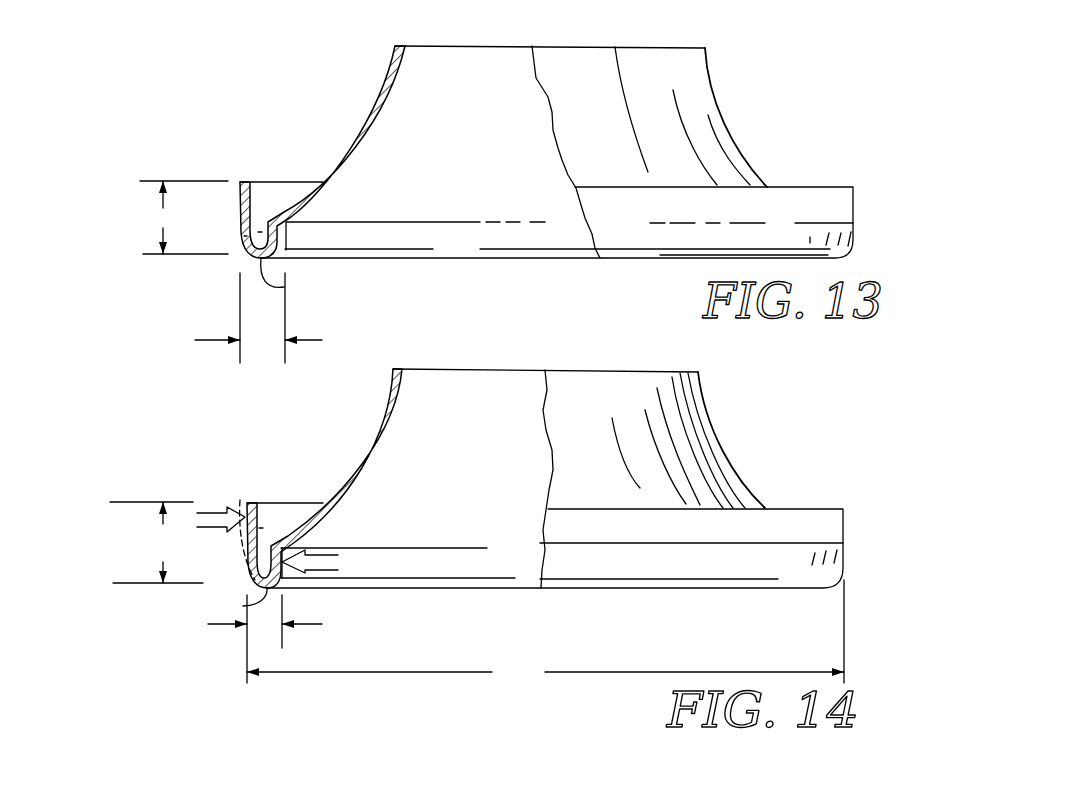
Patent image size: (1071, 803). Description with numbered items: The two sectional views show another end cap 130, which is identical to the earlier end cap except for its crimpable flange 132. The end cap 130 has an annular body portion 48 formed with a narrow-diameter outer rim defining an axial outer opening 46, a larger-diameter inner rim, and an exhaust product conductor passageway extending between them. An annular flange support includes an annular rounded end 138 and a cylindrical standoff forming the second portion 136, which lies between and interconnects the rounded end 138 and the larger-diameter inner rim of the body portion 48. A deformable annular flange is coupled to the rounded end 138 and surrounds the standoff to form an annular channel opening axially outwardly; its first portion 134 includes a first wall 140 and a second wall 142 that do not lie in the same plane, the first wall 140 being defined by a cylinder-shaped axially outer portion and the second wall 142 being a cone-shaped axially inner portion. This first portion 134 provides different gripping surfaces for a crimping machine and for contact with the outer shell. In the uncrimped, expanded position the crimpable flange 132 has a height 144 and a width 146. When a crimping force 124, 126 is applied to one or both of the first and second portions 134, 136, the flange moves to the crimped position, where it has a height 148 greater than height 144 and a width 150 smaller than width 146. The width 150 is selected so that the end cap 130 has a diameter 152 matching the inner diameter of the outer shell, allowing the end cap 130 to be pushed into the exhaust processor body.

In FIG. 13, the axial outer opening 46 is at (433, 46).
In FIG. 14, the axial outer opening 46 is at (430, 369).
In FIG. 13, the annular body portion 48 is at (390, 106).
In FIG. 14, the annular body portion 48 is at (385, 447).
In FIG. 14, the crimping force 124 is at (212, 515).
In FIG. 14, the crimping force 126 is at (328, 557).
In FIG. 13, the end cap 130 is at (744, 68).
In FIG. 14, the end cap 130 is at (778, 445).
In FIG. 13, the crimpable flange 132 is at (860, 209).
In FIG. 14, the crimpable flange 132 is at (852, 532).
In FIG. 13, the first portion 134 is at (252, 232).
In FIG. 14, the first portion 134 is at (260, 528).
In FIG. 13, the second portion 136 is at (290, 233).
In FIG. 14, the second portion 136 is at (295, 580).
In FIG. 13, the rounded end 138 is at (284, 287).
In FIG. 14, the rounded end 138 is at (243, 606).
In FIG. 13, the first wall 140 is at (238, 203).
In FIG. 14, the first wall 140 is at (245, 504).
In FIG. 13, the second wall 142 is at (246, 236).
In FIG. 14, the second wall 142 is at (286, 519).
In FIG. 13, the height 144 is at (184, 217).
In FIG. 13, the width 146 is at (205, 341).
In FIG. 14, the height 148 is at (156, 542).
In FIG. 14, the width 150 is at (310, 625).
In FIG. 14, the diameter 152 is at (545, 632).